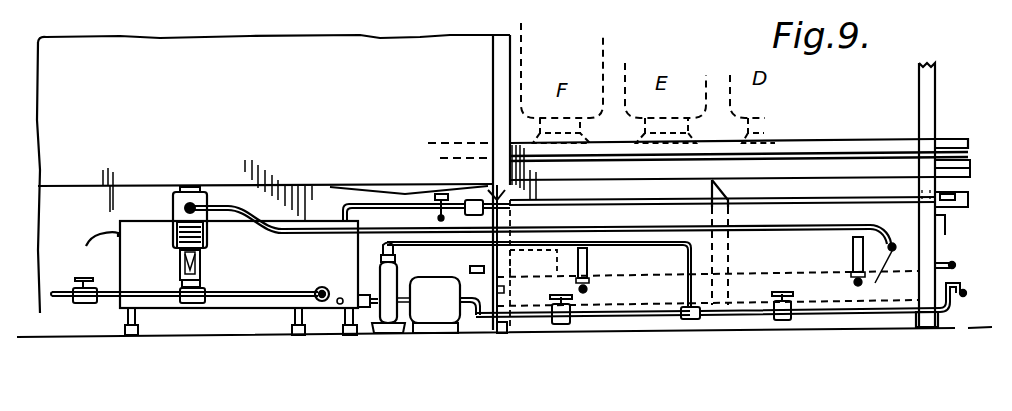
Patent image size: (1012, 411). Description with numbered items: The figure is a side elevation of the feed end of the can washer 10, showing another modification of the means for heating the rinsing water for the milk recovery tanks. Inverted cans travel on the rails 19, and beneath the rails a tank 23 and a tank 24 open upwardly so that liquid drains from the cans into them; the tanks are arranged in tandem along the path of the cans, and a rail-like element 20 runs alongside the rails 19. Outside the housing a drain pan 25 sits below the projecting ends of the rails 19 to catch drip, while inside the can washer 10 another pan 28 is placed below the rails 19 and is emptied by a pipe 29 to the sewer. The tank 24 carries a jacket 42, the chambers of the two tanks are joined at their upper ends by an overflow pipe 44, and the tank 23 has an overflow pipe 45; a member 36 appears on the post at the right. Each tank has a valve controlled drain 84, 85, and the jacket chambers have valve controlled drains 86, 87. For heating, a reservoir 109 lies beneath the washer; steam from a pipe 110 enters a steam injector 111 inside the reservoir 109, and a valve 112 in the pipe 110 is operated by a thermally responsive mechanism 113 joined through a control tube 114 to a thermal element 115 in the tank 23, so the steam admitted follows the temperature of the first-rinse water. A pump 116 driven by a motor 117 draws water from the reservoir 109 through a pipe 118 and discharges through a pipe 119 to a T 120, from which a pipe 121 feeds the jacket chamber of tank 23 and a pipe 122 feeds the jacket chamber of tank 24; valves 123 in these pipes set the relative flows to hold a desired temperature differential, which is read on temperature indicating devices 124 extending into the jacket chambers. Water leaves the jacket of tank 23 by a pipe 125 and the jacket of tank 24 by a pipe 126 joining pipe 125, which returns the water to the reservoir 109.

The can washer 10 is at (286, 182).
The rails 19 is at (445, 141).
The rail track 20 is at (768, 165).
The tank 23 is at (922, 219).
The tank 24 is at (712, 190).
The drain pan 25 is at (945, 165).
The pan 28 is at (410, 190).
The pipe 29 is at (437, 216).
The bracket 36 is at (937, 229).
The jacket 42 is at (490, 195).
The overflow pipe 44 is at (730, 214).
The overflow pipe 45 is at (955, 200).
The valve controlled drain 84 is at (953, 264).
The valve controlled drain 85 is at (476, 268).
The valve controlled drain 86 is at (966, 292).
The valve controlled drain 87 is at (478, 298).
The reservoir 109 is at (222, 278).
The pipe 110 is at (141, 292).
The steam injector 111 is at (334, 270).
The valve 112 is at (183, 304).
The thermally responsive mechanism 113 is at (176, 199).
The control tube 114 is at (790, 230).
The thermal element 115 is at (896, 272).
The pump 116 is at (392, 312).
The motor 117 is at (428, 305).
The pipe 118 is at (372, 306).
The pipe 119 is at (566, 244).
The T 120 is at (697, 320).
The pipe 121 is at (856, 314).
The pipe 122 is at (640, 318).
The valves 123 is at (557, 322).
The temperature indicating devices 124 is at (589, 262).
The pipe 125 is at (835, 206).
The pipe 126 is at (497, 198).